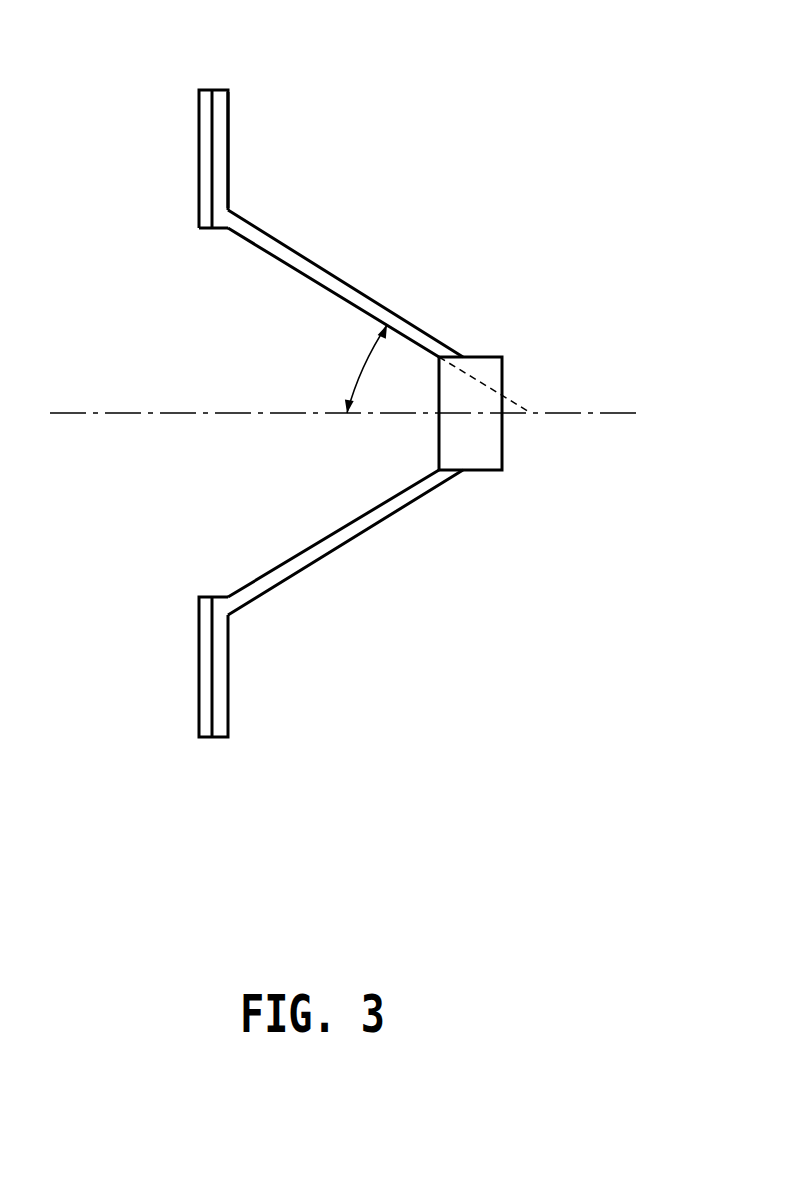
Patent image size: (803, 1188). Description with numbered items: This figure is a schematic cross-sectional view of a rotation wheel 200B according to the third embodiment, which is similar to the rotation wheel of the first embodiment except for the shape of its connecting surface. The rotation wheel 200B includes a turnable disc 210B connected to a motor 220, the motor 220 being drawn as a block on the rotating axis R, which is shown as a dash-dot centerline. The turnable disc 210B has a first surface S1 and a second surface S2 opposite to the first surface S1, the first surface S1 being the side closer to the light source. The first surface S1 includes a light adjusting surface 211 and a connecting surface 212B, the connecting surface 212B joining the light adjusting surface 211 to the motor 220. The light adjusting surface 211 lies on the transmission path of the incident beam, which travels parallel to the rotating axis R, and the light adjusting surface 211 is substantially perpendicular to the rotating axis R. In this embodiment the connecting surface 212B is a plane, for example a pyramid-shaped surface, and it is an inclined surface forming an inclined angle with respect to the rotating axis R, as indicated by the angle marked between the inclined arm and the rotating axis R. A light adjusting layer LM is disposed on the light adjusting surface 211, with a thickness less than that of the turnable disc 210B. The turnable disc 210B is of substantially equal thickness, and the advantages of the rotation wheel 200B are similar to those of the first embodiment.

The rotation wheel 200B is at (697, 903).
The turnable disc 210B is at (398, 88).
The light adjusting surface 211 is at (218, 177).
The connecting surface 212B is at (338, 290).
The motor 220 is at (487, 373).
The first surface S1 is at (205, 117).
The second surface S2 is at (235, 117).
The light adjusting layer LM is at (207, 705).
The rotating axis R is at (108, 413).